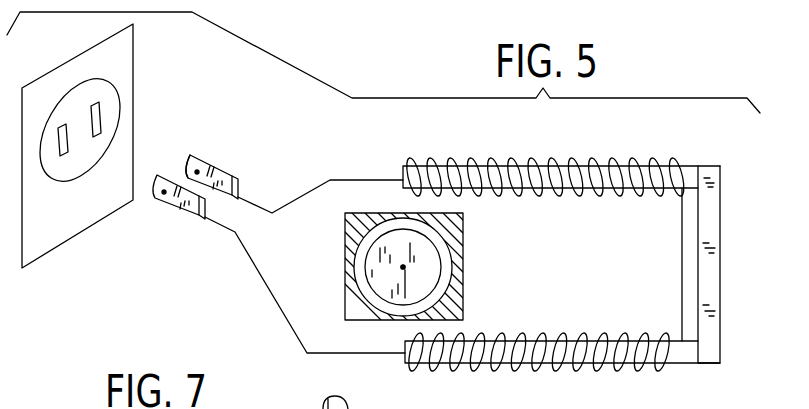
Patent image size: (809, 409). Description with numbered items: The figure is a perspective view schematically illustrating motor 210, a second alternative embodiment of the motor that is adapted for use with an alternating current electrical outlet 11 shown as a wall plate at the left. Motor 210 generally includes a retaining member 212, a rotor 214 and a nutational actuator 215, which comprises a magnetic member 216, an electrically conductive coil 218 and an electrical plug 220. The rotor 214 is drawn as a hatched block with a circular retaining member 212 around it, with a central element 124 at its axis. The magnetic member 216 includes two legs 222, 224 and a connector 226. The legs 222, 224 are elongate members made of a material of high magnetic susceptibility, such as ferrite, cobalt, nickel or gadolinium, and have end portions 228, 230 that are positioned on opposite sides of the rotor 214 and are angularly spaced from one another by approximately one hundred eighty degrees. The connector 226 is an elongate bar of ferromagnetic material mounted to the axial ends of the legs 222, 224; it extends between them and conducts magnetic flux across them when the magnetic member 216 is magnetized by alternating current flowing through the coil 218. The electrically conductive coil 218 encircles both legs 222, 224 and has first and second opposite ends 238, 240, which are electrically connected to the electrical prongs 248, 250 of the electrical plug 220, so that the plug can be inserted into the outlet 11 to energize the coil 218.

The wall outlet 11 is at (78, 55).
The motor 210 is at (634, 119).
The electrical plug 220 is at (219, 157).
The electrical prong 250 is at (205, 152).
The electrical prong 248 is at (170, 213).
The second end of coil 240 is at (257, 204).
The first end of coil 238 is at (218, 226).
The end portion of leg 228 is at (417, 167).
The nutational actuator 215 is at (474, 159).
The leg 222 is at (536, 162).
The electrically conductive coil 218 is at (590, 162).
The magnetic member 216 is at (646, 159).
The connector 226 is at (721, 263).
The end portion of leg 230 is at (418, 369).
The leg 224 is at (521, 366).
The rotor 214 is at (360, 270).
The retaining member 212 is at (463, 295).
The light emitting element 124 is at (405, 267).